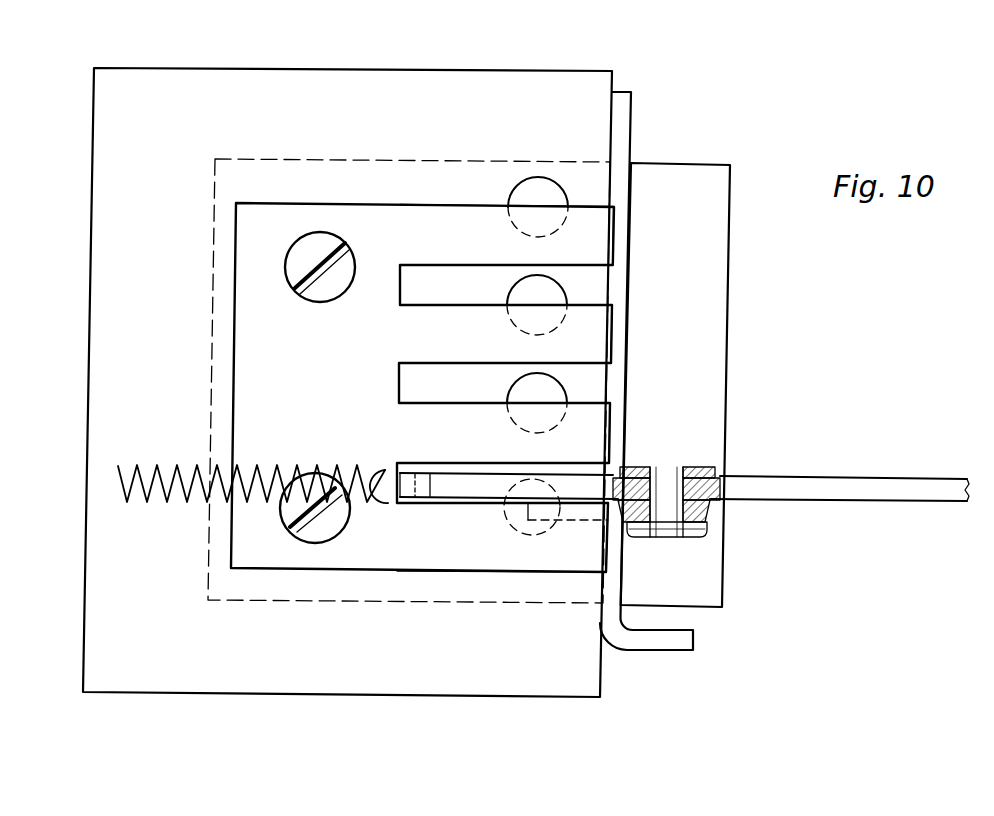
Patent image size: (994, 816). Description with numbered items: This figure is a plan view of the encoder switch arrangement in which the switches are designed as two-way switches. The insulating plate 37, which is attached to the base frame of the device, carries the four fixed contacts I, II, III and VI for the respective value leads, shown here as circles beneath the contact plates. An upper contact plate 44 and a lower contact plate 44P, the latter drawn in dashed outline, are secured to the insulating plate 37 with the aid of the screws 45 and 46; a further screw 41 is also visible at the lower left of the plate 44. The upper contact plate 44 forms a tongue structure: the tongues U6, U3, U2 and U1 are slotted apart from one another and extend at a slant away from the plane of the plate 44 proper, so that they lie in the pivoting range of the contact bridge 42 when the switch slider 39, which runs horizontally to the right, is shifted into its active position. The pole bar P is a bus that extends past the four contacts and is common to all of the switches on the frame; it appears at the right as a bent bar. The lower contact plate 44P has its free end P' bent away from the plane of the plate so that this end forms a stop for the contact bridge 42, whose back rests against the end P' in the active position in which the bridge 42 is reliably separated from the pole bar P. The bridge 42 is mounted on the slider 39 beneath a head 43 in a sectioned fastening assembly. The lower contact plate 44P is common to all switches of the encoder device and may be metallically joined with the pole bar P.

The insulating plate 37 is at (580, 678).
The upper contact plate 44 is at (375, 213).
The lower contact plate 44P is at (366, 605).
The screw 46 is at (238, 267).
The screw 45 is at (300, 262).
The fastening screw 41 is at (337, 490).
The switch slider 39 is at (843, 485).
The bolt head 43 is at (663, 483).
The contact bridge 42 is at (710, 518).
The pole bar P is at (667, 390).
The free end of lower contact plate P' is at (700, 385).
The tongue U6 is at (598, 242).
The tongue U3 is at (598, 340).
The tongue U2 is at (597, 422).
The tongue U1 is at (585, 555).
The fixed contact VI is at (538, 177).
The fixed contact III is at (508, 293).
The fixed contact II is at (510, 385).
The fixed contact I is at (502, 522).